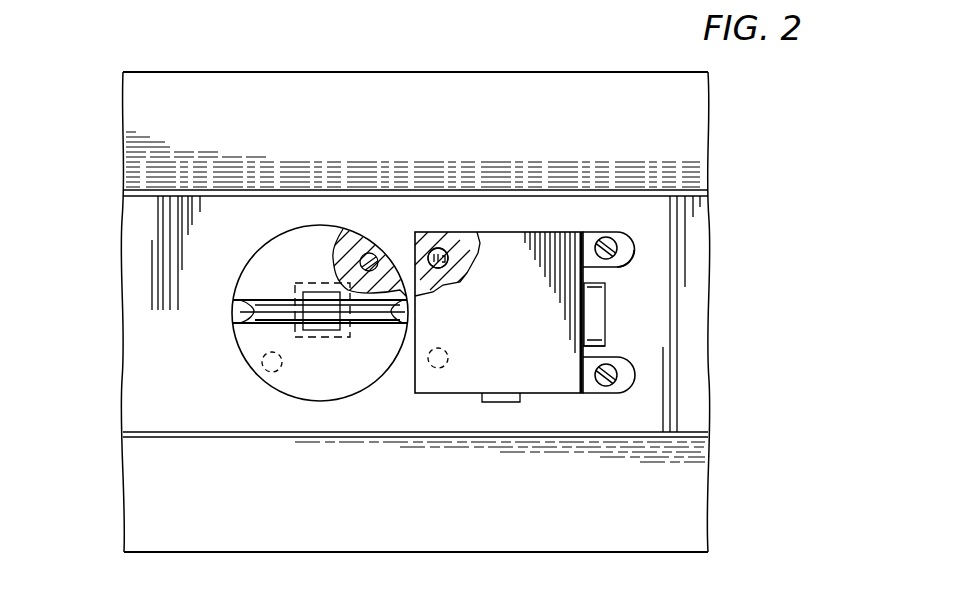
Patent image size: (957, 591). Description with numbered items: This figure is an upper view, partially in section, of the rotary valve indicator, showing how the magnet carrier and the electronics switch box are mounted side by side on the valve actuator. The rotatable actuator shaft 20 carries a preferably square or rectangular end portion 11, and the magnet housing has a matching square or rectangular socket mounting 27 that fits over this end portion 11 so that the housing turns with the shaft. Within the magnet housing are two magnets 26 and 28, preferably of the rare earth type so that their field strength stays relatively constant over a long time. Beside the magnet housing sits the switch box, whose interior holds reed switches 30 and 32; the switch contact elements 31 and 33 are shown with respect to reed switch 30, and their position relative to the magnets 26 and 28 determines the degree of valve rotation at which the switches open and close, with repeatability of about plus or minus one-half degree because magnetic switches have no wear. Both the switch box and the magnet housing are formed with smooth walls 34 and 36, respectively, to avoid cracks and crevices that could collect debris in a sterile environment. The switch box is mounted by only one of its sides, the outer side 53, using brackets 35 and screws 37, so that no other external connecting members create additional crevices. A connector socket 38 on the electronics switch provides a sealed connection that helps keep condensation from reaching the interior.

The end portion 11 is at (335, 331).
The actuator shaft 20 is at (305, 297).
The magnet 26 is at (369, 252).
The socket mounting 27 is at (303, 292).
The magnet 28 is at (261, 365).
The reed switch 30 is at (440, 249).
The switch contact element 31 is at (431, 250).
The reed switch 32 is at (436, 369).
The switch contact element 33 is at (467, 262).
The smooth wall 34 is at (292, 228).
The bracket 35 is at (627, 252).
The smooth wall 36 is at (566, 232).
The screw 37 is at (612, 243).
The connector socket 38 is at (600, 305).
The outer side 53 is at (593, 352).